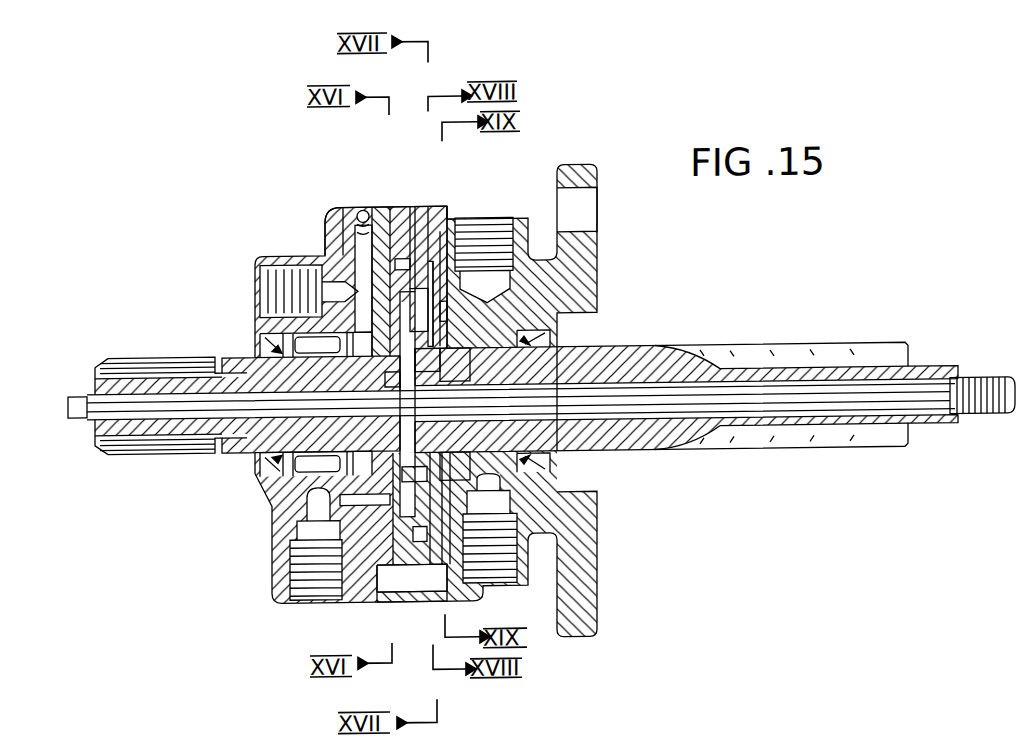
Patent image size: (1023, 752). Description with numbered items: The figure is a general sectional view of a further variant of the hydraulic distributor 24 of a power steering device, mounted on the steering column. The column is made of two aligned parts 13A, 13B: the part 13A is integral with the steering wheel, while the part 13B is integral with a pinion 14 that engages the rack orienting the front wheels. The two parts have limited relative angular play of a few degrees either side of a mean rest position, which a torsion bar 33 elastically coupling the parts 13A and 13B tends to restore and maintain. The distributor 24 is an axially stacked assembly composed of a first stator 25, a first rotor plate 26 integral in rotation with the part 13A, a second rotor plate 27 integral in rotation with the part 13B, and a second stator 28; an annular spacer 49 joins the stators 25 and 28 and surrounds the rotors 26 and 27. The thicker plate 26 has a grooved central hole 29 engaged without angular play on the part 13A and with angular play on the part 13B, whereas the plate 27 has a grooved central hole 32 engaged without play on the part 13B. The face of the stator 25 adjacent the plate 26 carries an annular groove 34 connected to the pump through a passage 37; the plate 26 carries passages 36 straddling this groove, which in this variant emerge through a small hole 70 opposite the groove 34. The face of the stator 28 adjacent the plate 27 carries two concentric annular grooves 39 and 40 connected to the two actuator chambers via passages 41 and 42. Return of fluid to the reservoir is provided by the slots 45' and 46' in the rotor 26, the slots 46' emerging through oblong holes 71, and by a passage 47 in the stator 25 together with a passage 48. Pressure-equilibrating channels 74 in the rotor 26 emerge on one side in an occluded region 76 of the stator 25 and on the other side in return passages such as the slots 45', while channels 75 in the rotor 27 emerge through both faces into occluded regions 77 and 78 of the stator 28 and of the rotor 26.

The part of the steering column 13A is at (235, 352).
The part of the steering column 13B is at (657, 346).
The pinion 14 is at (745, 353).
The distributor 24 is at (548, 166).
The first stator 25 is at (342, 206).
The first rotor plate 26 is at (404, 256).
The second rotor plate 27 is at (433, 258).
The second stator 28 is at (457, 210).
The grooved central hole 29 is at (432, 402).
The grooved central hole 32 is at (465, 402).
The torsion bar 33 is at (813, 392).
The annular groove 34 is at (396, 506).
The passages 36 is at (446, 312).
The passage 37 is at (318, 596).
The annular groove 39 is at (447, 292).
The annular groove 40 is at (450, 478).
The passage 41 is at (507, 217).
The passage 42 is at (507, 580).
The external peripheral slots 45' is at (412, 611).
The internal peripheral slots 46' is at (375, 395).
The passage 47 is at (353, 264).
The passage 48 is at (258, 285).
The annular spacer 49 is at (415, 204).
The small hole 70 is at (383, 326).
The oblong holes 71 is at (400, 468).
The pressure-equilibrating channels 74 is at (426, 535).
The pressure-equilibrating channels 75 is at (457, 476).
The occluded region 76 is at (400, 528).
The occluded region 77 is at (443, 496).
The occluded region 78 is at (440, 494).